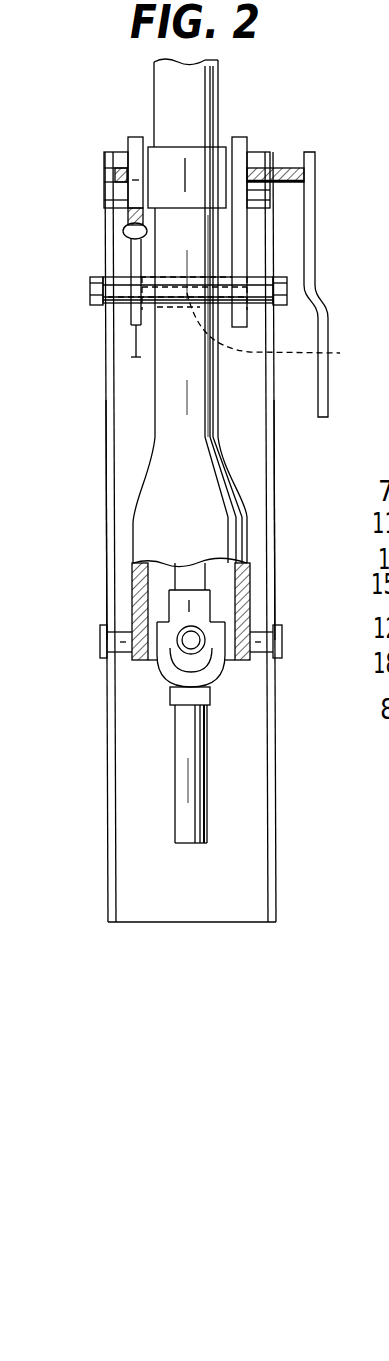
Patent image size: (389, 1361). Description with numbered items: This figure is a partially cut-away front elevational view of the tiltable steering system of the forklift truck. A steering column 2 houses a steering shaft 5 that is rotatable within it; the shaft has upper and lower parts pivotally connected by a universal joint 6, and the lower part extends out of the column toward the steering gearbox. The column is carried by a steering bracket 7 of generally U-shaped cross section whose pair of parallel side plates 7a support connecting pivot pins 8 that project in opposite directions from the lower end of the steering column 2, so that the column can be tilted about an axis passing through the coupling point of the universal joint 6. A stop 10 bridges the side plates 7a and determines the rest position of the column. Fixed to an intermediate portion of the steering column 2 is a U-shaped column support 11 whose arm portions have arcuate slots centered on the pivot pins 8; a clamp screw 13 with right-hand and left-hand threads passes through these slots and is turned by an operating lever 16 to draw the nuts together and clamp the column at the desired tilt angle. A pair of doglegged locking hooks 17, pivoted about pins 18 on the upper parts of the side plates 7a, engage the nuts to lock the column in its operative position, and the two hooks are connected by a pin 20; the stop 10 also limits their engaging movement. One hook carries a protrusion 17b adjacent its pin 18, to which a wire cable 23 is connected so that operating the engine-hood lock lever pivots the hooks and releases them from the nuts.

The steering column 2 is at (216, 86).
The steering shaft 5 is at (196, 791).
The universal joint 6 is at (165, 676).
The steering bracket 7 is at (175, 904).
The side plates 7a is at (107, 523).
The connecting pivot pins 8 is at (100, 641).
The stop 10 is at (112, 312).
The column support 11 is at (198, 147).
The clamp screw 13 is at (280, 166).
The operating lever 16 is at (312, 238).
The locking hooks 17 is at (132, 146).
The protrusion 17b is at (125, 218).
The pins 18 is at (115, 199).
The pin 20 is at (239, 325).
The wire cable 23 is at (133, 350).